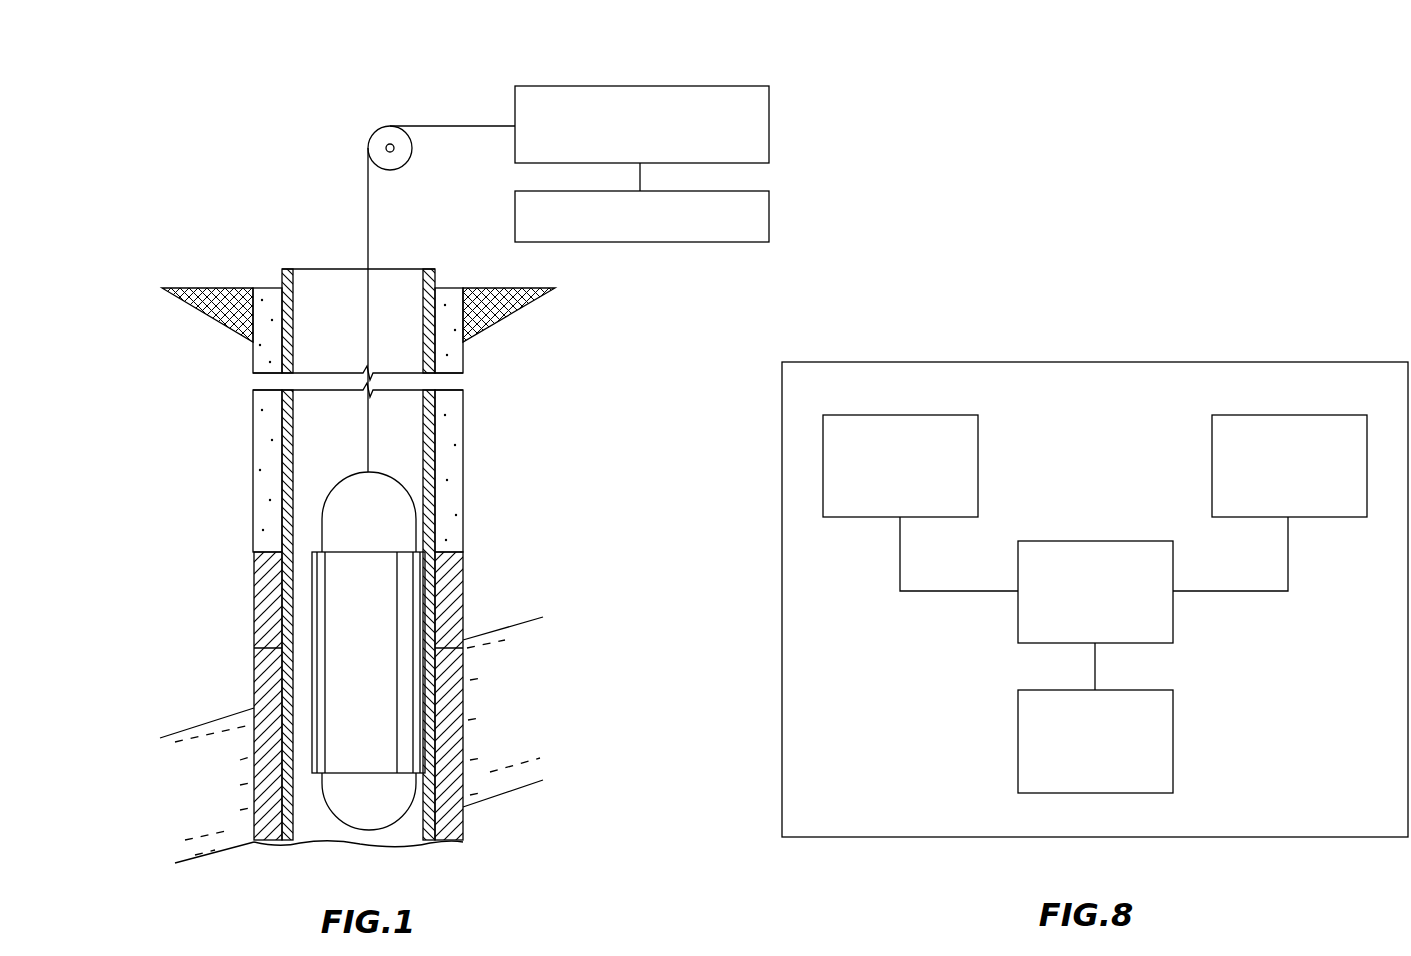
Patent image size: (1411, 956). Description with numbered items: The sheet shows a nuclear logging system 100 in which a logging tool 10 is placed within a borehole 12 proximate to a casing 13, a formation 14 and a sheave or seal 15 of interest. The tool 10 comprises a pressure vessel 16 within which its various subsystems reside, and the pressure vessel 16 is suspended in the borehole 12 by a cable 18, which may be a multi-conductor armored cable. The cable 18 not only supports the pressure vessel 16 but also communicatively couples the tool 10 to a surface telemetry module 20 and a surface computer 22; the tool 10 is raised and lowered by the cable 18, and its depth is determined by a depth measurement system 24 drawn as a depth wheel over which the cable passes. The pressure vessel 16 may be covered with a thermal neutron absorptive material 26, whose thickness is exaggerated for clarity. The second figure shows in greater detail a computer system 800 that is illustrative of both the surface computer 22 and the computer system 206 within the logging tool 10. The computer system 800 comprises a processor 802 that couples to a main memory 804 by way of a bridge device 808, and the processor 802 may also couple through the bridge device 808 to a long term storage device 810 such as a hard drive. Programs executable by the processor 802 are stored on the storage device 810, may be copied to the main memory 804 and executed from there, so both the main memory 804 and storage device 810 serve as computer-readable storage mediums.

In FIG. 1, the nuclear logging system 100 is at (243, 165).
In FIG. 1, the logging tool 10 is at (311, 640).
In FIG. 1, the borehole 12 is at (358, 420).
In FIG. 1, the casing 13 is at (435, 450).
In FIG. 1, the formation 14 is at (351, 740).
In FIG. 1, the seal 15 is at (460, 573).
In FIG. 1, the pressure vessel 16 is at (369, 512).
In FIG. 1, the cable 18 is at (368, 228).
In FIG. 1, the surface telemetry module 20 is at (769, 112).
In FIG. 1, the surface computer 22 is at (769, 217).
In FIG. 8, the surface computer 22 is at (1095, 577).
In FIG. 1, the depth measurement system 24 is at (405, 165).
In FIG. 1, the thermal neutron absorptive material 26 is at (368, 691).
In FIG. 8, the computer system 800 is at (1095, 541).
In FIG. 8, the computer system within the logging tool 206 is at (1278, 362).
In FIG. 8, the processor 802 is at (978, 440).
In FIG. 8, the main memory 804 is at (1212, 450).
In FIG. 8, the bridge device 808 is at (1173, 618).
In FIG. 8, the long term storage device 810 is at (1173, 700).